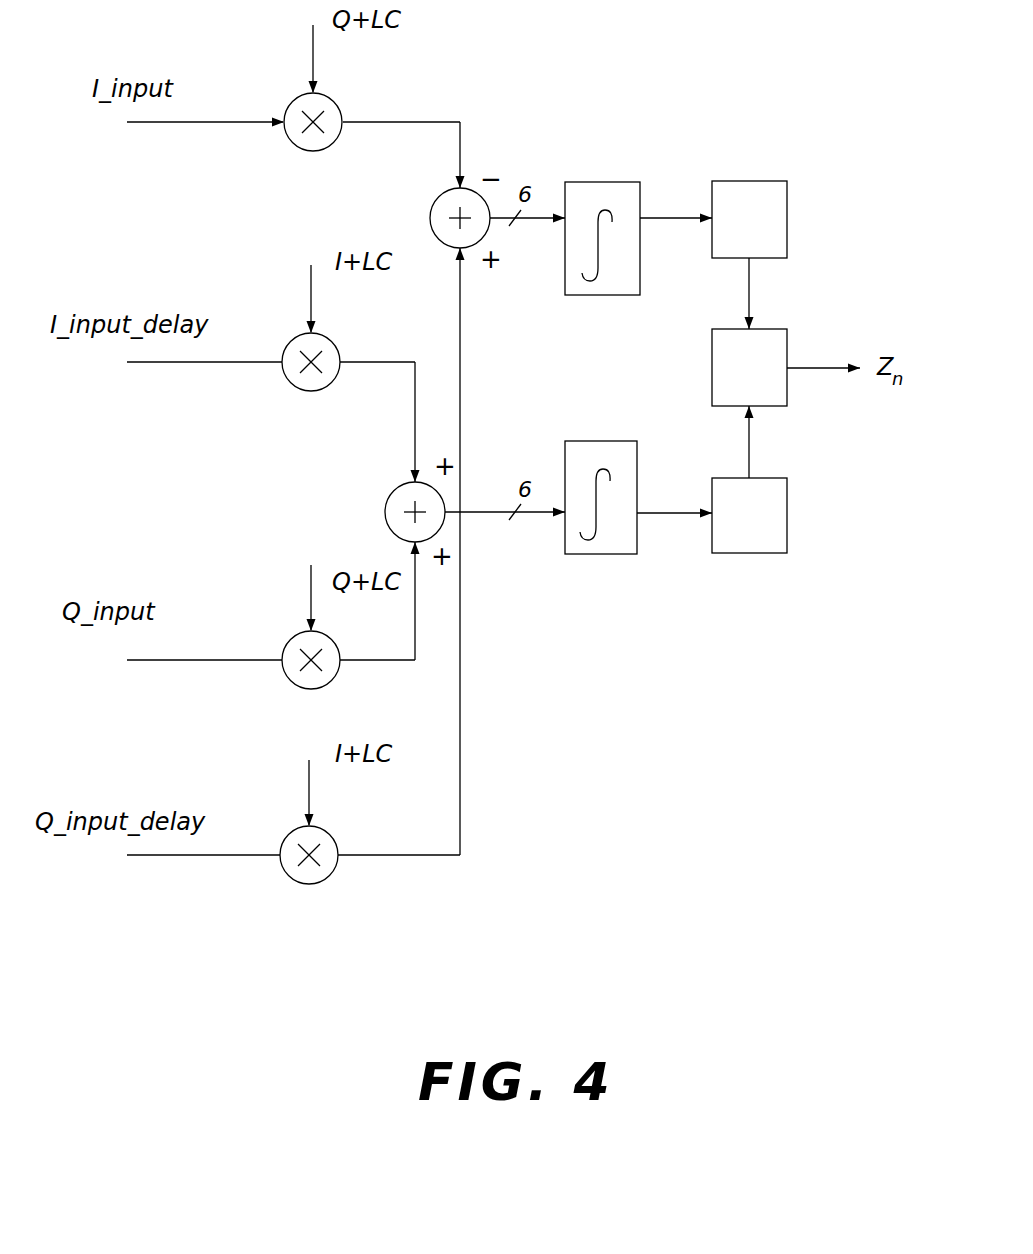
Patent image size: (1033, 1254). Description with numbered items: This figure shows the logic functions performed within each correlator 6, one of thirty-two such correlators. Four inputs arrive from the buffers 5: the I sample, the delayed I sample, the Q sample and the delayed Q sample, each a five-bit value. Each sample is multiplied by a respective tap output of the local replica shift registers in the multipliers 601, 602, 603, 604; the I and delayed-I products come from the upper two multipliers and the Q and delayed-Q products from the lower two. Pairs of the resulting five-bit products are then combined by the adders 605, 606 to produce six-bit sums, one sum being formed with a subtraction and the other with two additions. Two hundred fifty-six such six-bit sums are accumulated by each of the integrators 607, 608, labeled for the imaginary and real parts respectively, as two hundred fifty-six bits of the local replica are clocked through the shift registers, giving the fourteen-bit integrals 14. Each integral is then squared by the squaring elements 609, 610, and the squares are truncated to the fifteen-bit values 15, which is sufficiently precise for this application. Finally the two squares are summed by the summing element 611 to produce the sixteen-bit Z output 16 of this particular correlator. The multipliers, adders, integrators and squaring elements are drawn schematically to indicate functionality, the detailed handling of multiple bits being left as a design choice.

The correlator 6 is at (604, 649).
The multiplier 601 is at (297, 97).
The multiplier 602 is at (297, 338).
The multiplier 603 is at (297, 636).
The multiplier 604 is at (296, 830).
The adder 605 is at (430, 215).
The adder 606 is at (393, 497).
The integrator 607 is at (585, 182).
The integrator 608 is at (565, 470).
The squaring element 609 is at (745, 181).
The squaring element 610 is at (787, 503).
The summing element 611 is at (712, 372).
The buffer 5 is at (293, 475).
The 14-bit bus 14 is at (674, 353).
The 15-bit bus 15 is at (765, 368).
The 16-bit bus 16 is at (823, 354).